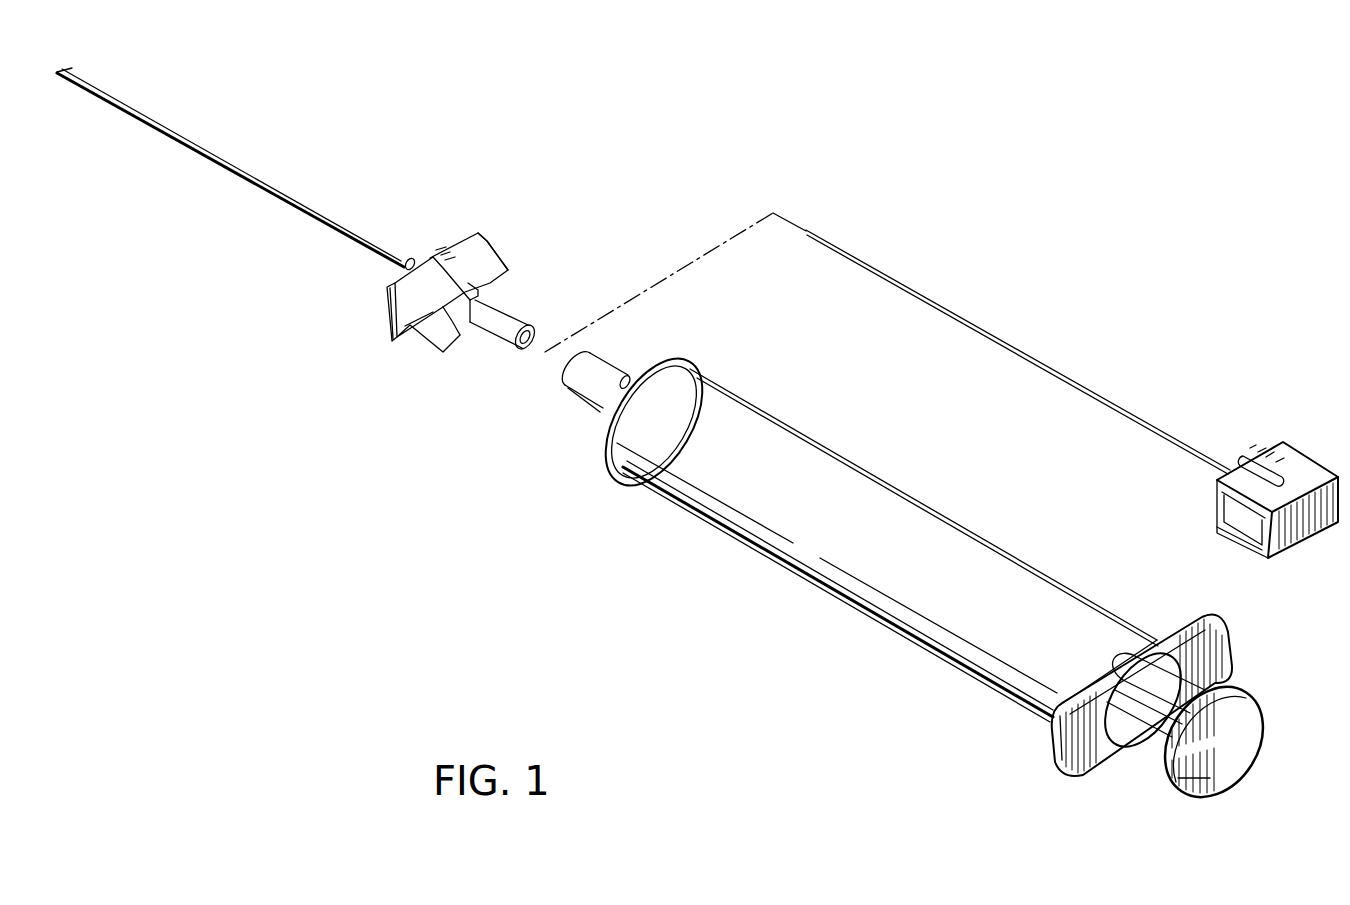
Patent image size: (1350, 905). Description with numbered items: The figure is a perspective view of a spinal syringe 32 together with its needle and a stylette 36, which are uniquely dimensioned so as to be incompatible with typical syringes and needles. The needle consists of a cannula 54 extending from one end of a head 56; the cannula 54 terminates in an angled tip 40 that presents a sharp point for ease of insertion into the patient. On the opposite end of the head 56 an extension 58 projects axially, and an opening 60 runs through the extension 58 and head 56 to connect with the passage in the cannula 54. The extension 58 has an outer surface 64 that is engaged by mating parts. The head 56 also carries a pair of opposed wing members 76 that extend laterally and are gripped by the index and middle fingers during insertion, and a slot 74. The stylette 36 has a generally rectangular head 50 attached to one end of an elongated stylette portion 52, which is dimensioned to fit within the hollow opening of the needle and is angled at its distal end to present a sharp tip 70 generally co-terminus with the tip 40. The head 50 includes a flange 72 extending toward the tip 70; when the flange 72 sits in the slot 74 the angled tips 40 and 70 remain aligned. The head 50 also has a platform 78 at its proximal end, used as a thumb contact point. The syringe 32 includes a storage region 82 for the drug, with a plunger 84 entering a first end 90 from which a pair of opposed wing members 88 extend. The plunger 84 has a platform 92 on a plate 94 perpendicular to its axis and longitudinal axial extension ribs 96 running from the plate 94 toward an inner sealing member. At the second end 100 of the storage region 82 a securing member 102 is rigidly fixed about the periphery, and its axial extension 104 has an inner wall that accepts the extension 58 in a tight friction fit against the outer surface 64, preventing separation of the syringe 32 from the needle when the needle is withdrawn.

The syringe 32 is at (923, 613).
The stylette 36 is at (1027, 353).
The tip 40 is at (62, 70).
The head 50 is at (1308, 473).
The stylette portion 52 is at (1113, 403).
The cannula 54 is at (285, 193).
The head 56 is at (460, 258).
The extension 58 is at (520, 318).
The opening 60 is at (530, 347).
The outer surface 64 is at (502, 323).
The tip 70 is at (810, 228).
The flange 72 is at (1242, 450).
The slot 74 is at (500, 296).
The wing members 76 is at (386, 312).
The platform 78 is at (1308, 523).
The storage region 82 is at (867, 490).
The plunger 84 is at (1240, 713).
The wing members 88 is at (1217, 648).
The first end 90 is at (1113, 638).
The platform 92 is at (1193, 765).
The plate 94 is at (1247, 735).
The axial extension ribs 96 is at (1165, 693).
The second end 100 is at (687, 397).
The securing member 102 is at (607, 428).
The axial extension 104 is at (598, 370).